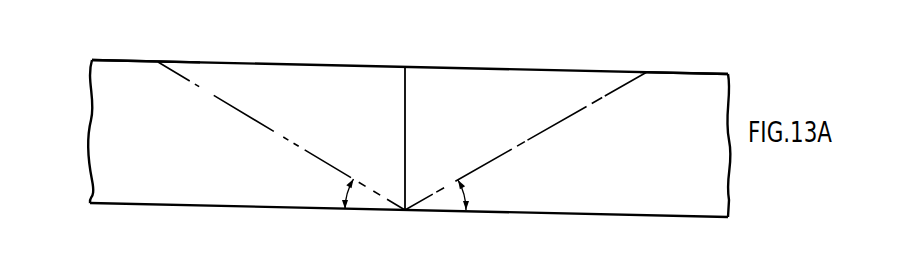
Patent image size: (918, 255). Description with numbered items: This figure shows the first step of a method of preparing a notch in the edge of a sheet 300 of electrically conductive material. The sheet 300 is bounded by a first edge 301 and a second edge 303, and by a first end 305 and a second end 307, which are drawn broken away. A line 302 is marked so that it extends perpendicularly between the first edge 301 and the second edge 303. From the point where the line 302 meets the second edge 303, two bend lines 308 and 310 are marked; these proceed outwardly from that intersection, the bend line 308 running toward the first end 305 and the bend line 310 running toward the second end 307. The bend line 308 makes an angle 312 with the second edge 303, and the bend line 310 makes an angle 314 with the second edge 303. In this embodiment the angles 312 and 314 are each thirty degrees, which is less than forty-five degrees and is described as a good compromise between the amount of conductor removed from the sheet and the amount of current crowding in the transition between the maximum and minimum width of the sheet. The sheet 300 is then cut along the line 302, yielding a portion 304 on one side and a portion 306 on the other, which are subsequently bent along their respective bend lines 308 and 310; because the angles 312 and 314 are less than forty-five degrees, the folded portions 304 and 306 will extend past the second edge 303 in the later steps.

The sheet 300 is at (277, 63).
The first edge 301 is at (560, 70).
The line 302 is at (404, 121).
The second edge 303 is at (550, 214).
The portion 304 is at (152, 70).
The first end 305 is at (88, 152).
The portion 306 is at (675, 82).
The second end 307 is at (730, 195).
The bend line 308 is at (277, 133).
The bend line 310 is at (551, 128).
The angle 312 is at (346, 186).
The angle 314 is at (464, 191).